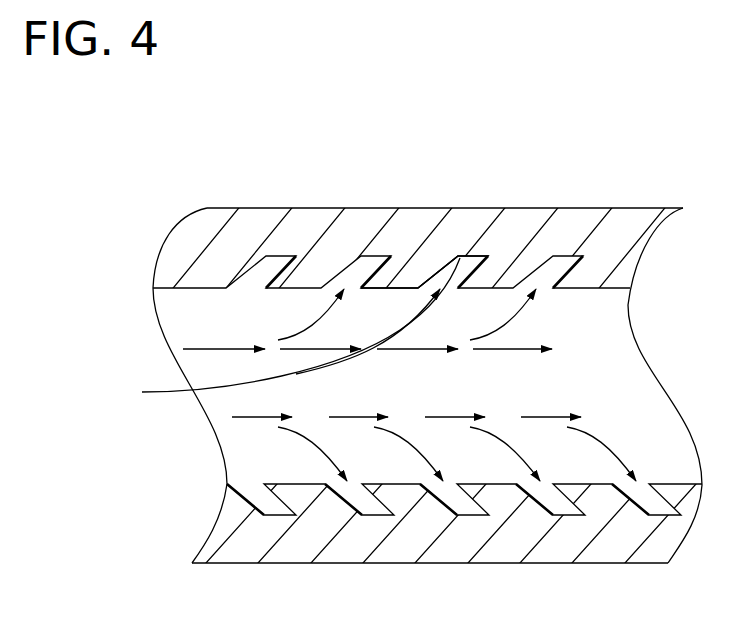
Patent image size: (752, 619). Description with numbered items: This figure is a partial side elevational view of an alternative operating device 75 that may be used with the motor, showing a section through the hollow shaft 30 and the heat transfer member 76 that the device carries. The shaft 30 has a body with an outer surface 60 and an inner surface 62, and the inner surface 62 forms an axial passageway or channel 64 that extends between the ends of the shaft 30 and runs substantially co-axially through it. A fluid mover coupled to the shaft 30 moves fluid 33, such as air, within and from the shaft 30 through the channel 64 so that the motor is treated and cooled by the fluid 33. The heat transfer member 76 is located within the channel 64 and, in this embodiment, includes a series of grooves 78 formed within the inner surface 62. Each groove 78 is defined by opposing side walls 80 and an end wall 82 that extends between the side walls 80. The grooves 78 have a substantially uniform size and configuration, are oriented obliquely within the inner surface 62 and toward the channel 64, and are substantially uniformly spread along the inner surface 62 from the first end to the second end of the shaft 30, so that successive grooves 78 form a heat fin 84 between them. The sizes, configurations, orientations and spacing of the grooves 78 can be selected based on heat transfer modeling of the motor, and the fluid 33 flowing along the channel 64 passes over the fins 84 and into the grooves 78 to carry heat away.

The hollow shaft 30 is at (375, 220).
The fluid 33 is at (527, 334).
The outer surface 60 is at (281, 208).
The inner surface 62 is at (203, 288).
The channel 64 is at (618, 393).
The operating device 75 is at (423, 196).
The heat transfer member 76 is at (491, 208).
The groove 78 is at (453, 262).
The side walls 80 is at (284, 332).
The end wall 82 is at (484, 258).
The heat fin 84 is at (398, 291).